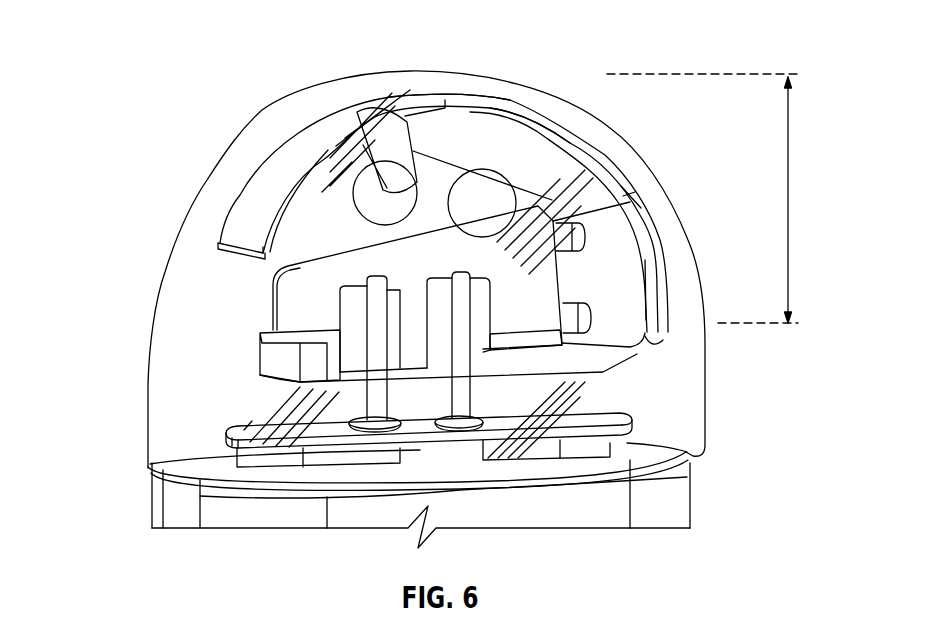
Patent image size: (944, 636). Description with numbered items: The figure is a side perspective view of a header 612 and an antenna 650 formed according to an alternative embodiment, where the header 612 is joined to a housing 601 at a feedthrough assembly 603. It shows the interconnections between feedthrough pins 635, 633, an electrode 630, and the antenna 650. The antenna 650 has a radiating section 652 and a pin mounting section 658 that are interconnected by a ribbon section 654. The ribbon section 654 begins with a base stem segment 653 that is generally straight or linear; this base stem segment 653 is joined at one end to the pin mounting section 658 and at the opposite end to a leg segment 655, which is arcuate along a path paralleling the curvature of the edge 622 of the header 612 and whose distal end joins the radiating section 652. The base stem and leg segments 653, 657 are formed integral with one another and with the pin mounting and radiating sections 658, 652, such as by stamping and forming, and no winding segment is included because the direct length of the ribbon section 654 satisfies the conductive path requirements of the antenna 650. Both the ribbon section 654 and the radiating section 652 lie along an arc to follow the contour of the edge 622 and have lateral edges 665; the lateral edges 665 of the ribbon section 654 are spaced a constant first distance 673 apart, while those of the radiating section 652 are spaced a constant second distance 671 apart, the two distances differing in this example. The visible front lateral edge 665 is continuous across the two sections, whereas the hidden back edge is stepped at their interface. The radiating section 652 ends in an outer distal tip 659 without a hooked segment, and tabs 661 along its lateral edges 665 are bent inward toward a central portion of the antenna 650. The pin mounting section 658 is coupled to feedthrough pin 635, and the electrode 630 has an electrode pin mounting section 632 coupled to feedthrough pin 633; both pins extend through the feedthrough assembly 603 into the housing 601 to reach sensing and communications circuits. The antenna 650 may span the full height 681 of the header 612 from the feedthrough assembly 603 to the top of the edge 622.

The housing 601 is at (687, 507).
The feedthrough assembly 603 is at (370, 278).
The header 612 is at (449, 240).
The edge 622 is at (467, 77).
The electrode 630 is at (310, 266).
The electrode pin mounting section 632 is at (360, 333).
The feedthrough pin 633 is at (373, 307).
The feedthrough pin 635 is at (463, 313).
The antenna 650 is at (247, 153).
The radiating section 652 is at (257, 217).
The base stem segment 653 is at (583, 370).
The ribbon section 654 is at (553, 113).
The leg segment 655 is at (516, 115).
The leg segment 657 is at (627, 190).
The pin mounting section 658 is at (440, 305).
The outer distal tip 659 is at (250, 256).
The tabs 661 is at (413, 150).
The lateral edges 665 is at (383, 116).
The second distance (width) 671 is at (298, 183).
The first distance (width) 673 is at (643, 283).
The full height 681 is at (788, 200).